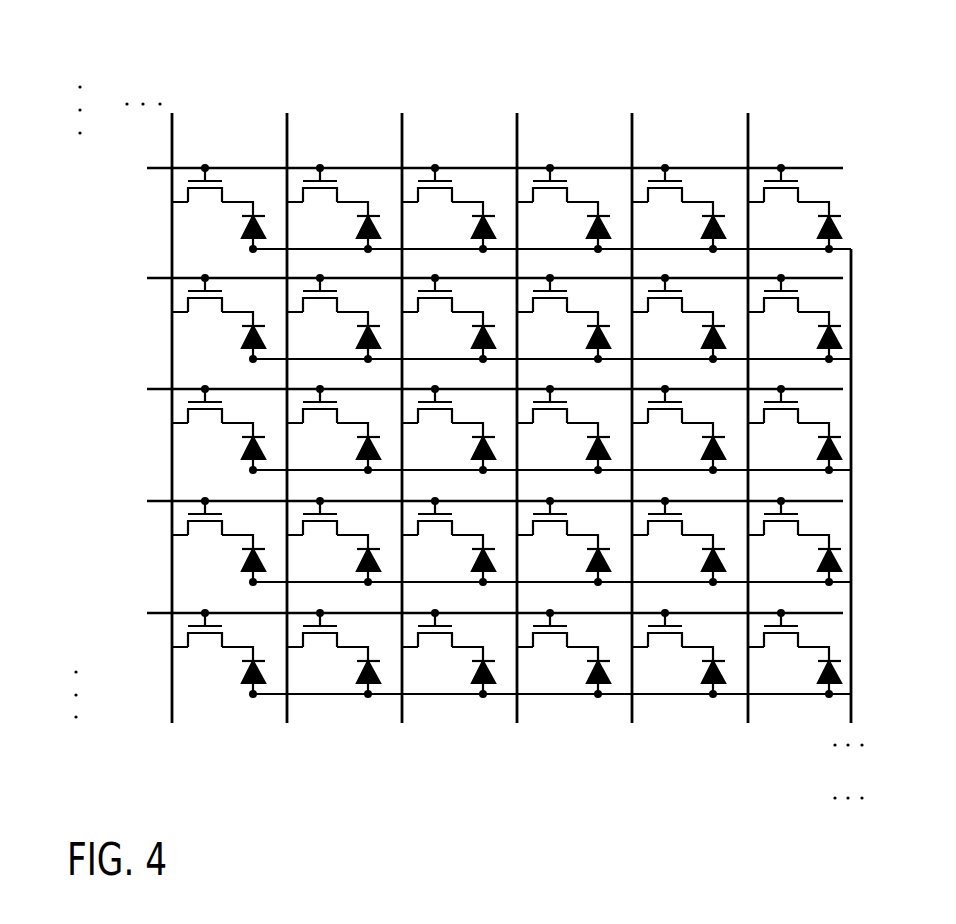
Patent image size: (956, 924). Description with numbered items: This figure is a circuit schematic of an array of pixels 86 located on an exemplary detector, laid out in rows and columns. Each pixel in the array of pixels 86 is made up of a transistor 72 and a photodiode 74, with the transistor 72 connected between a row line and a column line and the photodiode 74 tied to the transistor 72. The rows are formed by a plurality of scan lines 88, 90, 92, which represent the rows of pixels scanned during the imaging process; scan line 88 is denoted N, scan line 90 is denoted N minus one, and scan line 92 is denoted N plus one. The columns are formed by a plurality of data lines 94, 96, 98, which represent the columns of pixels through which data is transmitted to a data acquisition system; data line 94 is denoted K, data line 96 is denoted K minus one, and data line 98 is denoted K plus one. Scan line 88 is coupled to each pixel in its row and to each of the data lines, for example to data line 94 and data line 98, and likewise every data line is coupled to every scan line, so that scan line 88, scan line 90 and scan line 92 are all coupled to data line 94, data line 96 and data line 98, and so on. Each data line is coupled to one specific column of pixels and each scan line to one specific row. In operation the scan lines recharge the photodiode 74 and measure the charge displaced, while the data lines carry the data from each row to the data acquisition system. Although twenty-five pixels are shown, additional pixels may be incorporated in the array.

The array of pixels 86 is at (410, 80).
The transistor 72 is at (195, 181).
The photodiode 74 is at (256, 211).
The scan line 88 is at (57, 410).
The scan line 90 is at (55, 298).
The scan line 92 is at (37, 527).
The data line 94 is at (402, 817).
The data line 96 is at (285, 817).
The data line 98 is at (520, 817).